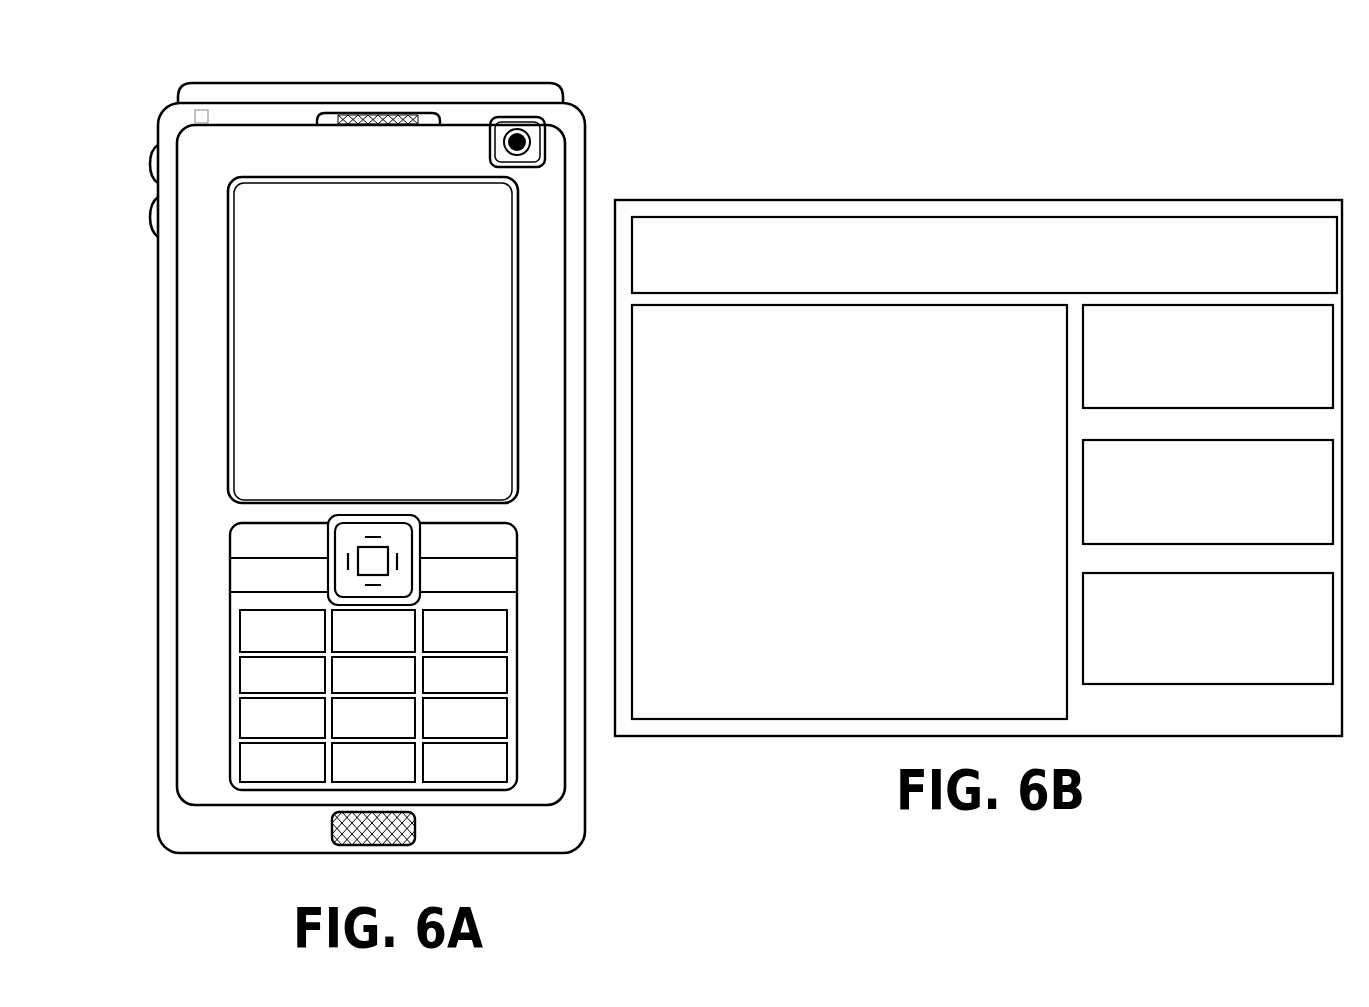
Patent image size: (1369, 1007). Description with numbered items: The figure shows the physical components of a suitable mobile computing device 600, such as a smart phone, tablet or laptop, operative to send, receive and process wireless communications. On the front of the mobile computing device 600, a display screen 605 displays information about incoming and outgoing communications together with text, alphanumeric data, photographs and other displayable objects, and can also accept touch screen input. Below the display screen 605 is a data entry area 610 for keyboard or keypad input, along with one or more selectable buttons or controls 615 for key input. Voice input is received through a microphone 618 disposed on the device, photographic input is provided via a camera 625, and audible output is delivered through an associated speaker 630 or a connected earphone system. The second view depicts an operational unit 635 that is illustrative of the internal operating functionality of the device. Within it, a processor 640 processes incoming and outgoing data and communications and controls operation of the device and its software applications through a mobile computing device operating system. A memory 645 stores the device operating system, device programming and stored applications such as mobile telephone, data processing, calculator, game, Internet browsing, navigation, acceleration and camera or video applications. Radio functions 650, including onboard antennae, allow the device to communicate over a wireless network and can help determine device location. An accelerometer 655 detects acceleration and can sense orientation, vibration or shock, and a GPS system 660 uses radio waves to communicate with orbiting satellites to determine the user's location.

In FIG. 6A, the mobile computing device 600 is at (150, 107).
In FIG. 6A, the display screen 605 is at (267, 322).
In FIG. 6A, the data entry area 610 is at (230, 570).
In FIG. 6A, the selectable buttons or controls 615 is at (253, 673).
In FIG. 6A, the microphone 618 is at (333, 830).
In FIG. 6A, the camera 625 is at (545, 150).
In FIG. 6A, the speaker 630 is at (418, 113).
In FIG. 6B, the operational unit 635 is at (1292, 192).
In FIG. 6B, the processor 640 is at (984, 255).
In FIG. 6B, the memory 645 is at (849, 512).
In FIG. 6B, the radio functions 650 is at (1208, 356).
In FIG. 6B, the accelerometer 655 is at (1208, 492).
In FIG. 6B, the GPS system 660 is at (1208, 628).